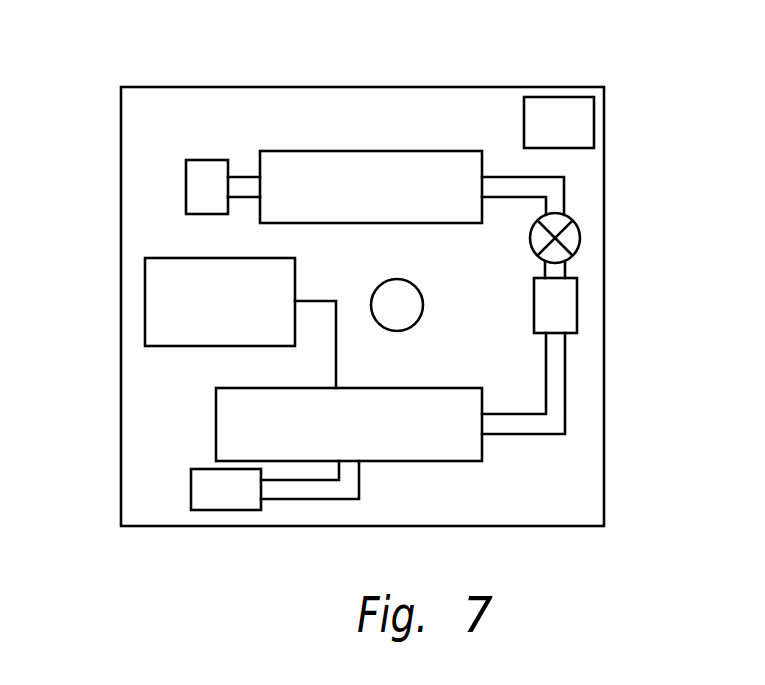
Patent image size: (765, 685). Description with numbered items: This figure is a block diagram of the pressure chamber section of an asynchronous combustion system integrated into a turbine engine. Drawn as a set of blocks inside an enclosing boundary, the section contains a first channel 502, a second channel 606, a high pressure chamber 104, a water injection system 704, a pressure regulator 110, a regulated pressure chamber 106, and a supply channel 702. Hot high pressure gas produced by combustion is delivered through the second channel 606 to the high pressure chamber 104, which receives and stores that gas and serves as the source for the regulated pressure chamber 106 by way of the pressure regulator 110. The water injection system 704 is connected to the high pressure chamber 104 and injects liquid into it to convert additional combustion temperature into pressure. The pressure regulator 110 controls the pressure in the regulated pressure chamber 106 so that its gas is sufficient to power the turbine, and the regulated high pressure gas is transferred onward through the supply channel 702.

The high pressure chamber 104 is at (216, 430).
The regulated pressure chamber 106 is at (378, 150).
The pressure regulator 110 is at (580, 243).
The first channel 502 is at (559, 96).
The second channel 606 is at (577, 300).
The supply channel 702 is at (209, 159).
The water injection system 704 is at (145, 302).